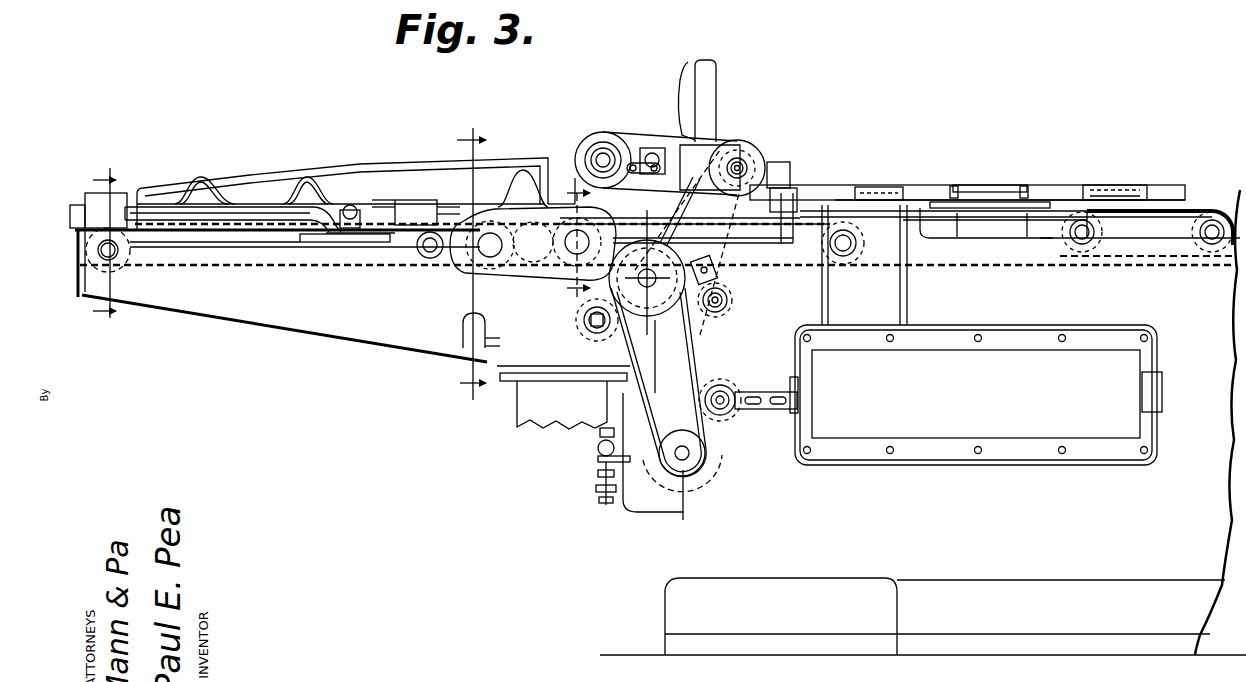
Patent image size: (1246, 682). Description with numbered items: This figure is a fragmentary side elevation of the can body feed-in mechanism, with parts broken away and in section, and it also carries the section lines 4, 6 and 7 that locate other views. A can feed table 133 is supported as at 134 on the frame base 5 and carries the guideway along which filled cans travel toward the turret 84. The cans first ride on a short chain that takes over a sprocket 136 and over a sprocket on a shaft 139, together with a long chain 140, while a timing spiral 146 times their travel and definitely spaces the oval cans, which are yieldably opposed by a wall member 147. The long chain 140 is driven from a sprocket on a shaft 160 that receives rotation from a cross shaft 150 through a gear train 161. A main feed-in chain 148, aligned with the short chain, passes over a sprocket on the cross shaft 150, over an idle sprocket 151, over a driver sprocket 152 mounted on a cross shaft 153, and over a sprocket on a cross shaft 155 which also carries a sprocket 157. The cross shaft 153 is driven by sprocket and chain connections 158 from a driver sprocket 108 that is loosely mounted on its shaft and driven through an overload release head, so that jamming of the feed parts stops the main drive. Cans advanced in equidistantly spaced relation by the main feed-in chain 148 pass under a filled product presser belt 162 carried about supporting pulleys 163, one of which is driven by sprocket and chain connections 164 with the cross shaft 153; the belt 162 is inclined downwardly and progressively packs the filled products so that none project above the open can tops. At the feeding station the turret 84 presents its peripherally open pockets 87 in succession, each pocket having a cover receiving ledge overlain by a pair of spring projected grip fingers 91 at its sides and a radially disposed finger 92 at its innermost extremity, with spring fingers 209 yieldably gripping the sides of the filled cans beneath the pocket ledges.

The section line 4- 4 is at (104, 243).
The frame base 5 is at (923, 422).
The section line 6- 6 is at (568, 237).
The section line 7- 7 is at (471, 261).
The turret 84 is at (943, 178).
The peripherally open pockets 87 is at (1032, 194).
The grip fingers 91 is at (957, 186).
The grip finger 92 is at (995, 188).
The driver sprocket 108 is at (690, 467).
The can feed table 133 is at (256, 312).
The feed table support 134 is at (547, 377).
The sprocket 136 is at (143, 266).
The shaft 139 is at (428, 250).
The long chain 140 is at (273, 267).
The timing spiral 146 is at (240, 200).
The wall member 147 is at (197, 207).
The main feed-in chain 148 is at (829, 276).
The cross shaft 150 is at (487, 248).
The idle sprocket 151 is at (488, 343).
The driver sprocket 152 is at (728, 301).
The cross shaft 153 is at (718, 287).
The cross shaft 155 is at (843, 238).
The sprocket 157 is at (888, 187).
The sprocket and chain connections 158 is at (722, 388).
The shaft 160 is at (583, 322).
The gear train 161 is at (575, 246).
The filled product presser belt 162 is at (707, 140).
The supporting pulleys 163 is at (599, 140).
The sprocket and chain connections 164 is at (757, 143).
The spring fingers 209 is at (1020, 230).